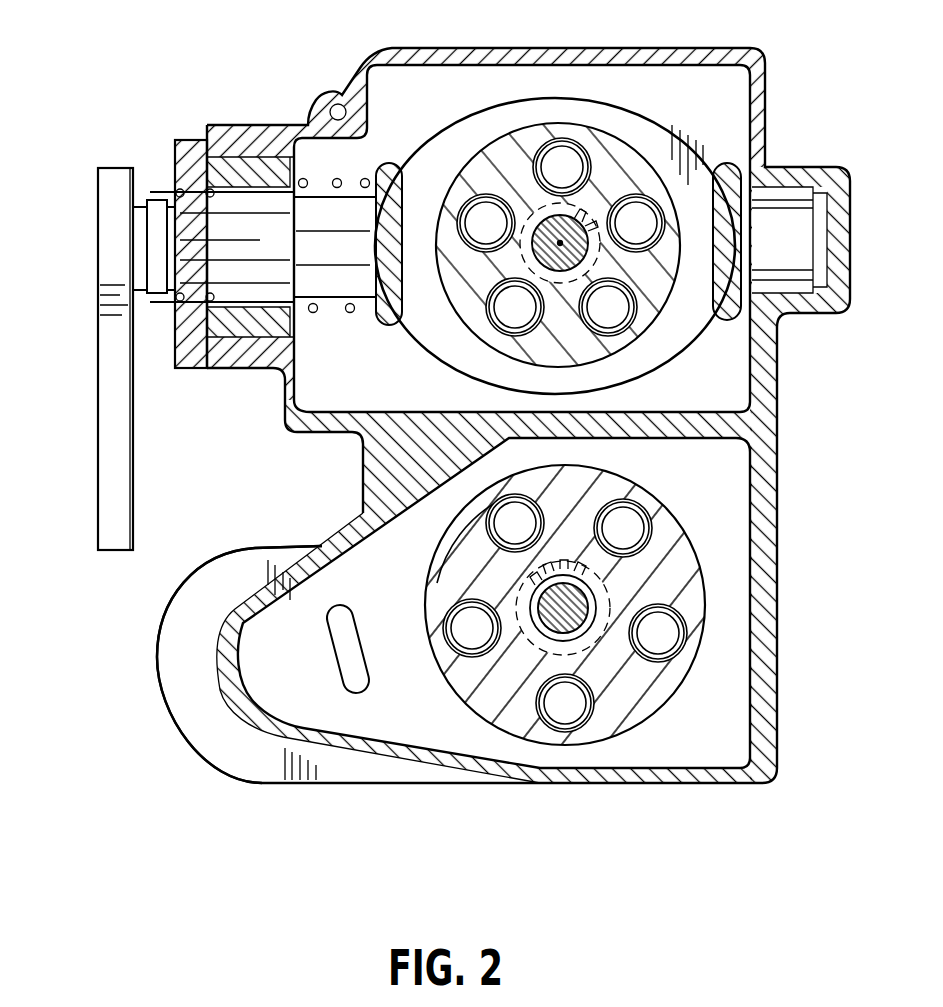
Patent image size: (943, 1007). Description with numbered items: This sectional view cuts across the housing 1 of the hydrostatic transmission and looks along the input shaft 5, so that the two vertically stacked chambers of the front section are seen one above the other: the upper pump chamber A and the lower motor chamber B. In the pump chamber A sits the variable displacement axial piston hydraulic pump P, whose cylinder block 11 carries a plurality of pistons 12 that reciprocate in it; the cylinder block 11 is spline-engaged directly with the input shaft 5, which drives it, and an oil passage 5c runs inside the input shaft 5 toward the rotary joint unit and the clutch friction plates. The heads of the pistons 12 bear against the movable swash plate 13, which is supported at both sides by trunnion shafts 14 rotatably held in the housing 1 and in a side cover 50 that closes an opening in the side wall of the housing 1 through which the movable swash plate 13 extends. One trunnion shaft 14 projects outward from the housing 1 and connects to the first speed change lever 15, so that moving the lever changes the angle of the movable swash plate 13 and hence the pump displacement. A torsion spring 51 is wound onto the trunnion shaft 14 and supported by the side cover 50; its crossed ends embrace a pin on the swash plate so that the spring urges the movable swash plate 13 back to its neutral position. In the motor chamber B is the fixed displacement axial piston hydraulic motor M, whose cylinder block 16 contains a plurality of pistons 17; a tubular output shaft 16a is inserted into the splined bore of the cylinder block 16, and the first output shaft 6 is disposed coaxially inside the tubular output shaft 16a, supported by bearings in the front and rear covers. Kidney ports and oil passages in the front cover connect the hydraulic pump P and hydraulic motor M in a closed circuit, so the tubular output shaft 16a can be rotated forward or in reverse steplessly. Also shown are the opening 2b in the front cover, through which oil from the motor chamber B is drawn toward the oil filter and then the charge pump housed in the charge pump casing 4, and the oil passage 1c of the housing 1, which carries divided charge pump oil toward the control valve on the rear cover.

The housing 1 is at (768, 118).
The oil passage 1c is at (333, 105).
The opening 2b is at (330, 612).
The charge pump casing 4 is at (205, 107).
The input shaft 5 is at (533, 220).
The oil passage 5c is at (560, 228).
The first output shaft 6 is at (590, 645).
The cylinder block 11 is at (487, 153).
The pistons 12 is at (457, 231).
The movable swash plate 13 is at (692, 365).
The trunnion shafts 14 is at (244, 230).
The first speed change lever 15 is at (98, 425).
The cylinder block 16 is at (450, 560).
The tubular output shaft 16a is at (620, 529).
The pistons 17 is at (433, 583).
The side cover 50 is at (178, 156).
The torsion spring 51 is at (350, 305).
The pump chamber A is at (725, 117).
The motor chamber B is at (728, 490).
The hydraulic pump P is at (538, 72).
The hydraulic motor M is at (718, 620).